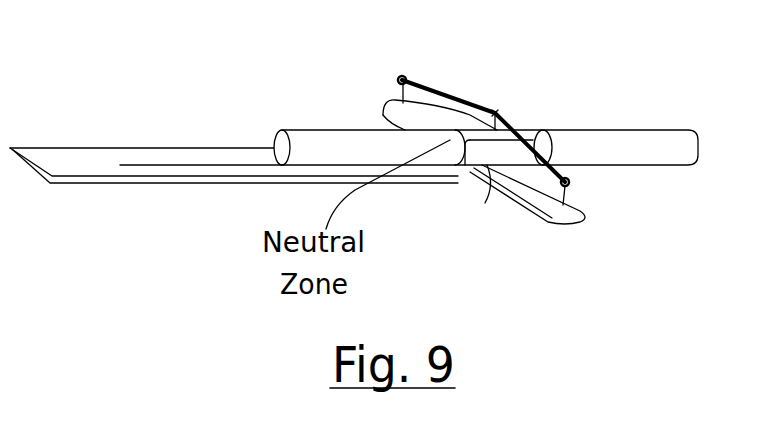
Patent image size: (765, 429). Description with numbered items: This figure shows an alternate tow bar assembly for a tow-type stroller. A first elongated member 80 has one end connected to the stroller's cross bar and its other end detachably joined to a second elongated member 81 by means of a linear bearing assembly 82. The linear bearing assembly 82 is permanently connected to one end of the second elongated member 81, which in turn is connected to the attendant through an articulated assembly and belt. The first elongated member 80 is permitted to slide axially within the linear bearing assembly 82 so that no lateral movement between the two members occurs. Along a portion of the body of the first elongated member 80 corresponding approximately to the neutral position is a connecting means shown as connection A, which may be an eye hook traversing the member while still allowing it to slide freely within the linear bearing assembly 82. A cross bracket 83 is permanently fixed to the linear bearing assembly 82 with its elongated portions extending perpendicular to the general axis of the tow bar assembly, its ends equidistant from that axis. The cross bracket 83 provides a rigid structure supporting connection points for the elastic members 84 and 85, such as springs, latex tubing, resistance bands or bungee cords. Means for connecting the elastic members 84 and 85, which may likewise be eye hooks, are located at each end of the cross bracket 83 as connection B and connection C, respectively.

The first elongated member 80 is at (652, 130).
The second elongated member 81 is at (134, 153).
The linear bearing assembly 82 is at (488, 165).
The cross bracket 83 is at (572, 222).
The elastic member 84 is at (545, 128).
The elastic member 85 is at (420, 86).
The connection A is at (510, 112).
The connection B is at (397, 86).
The connection C is at (566, 197).